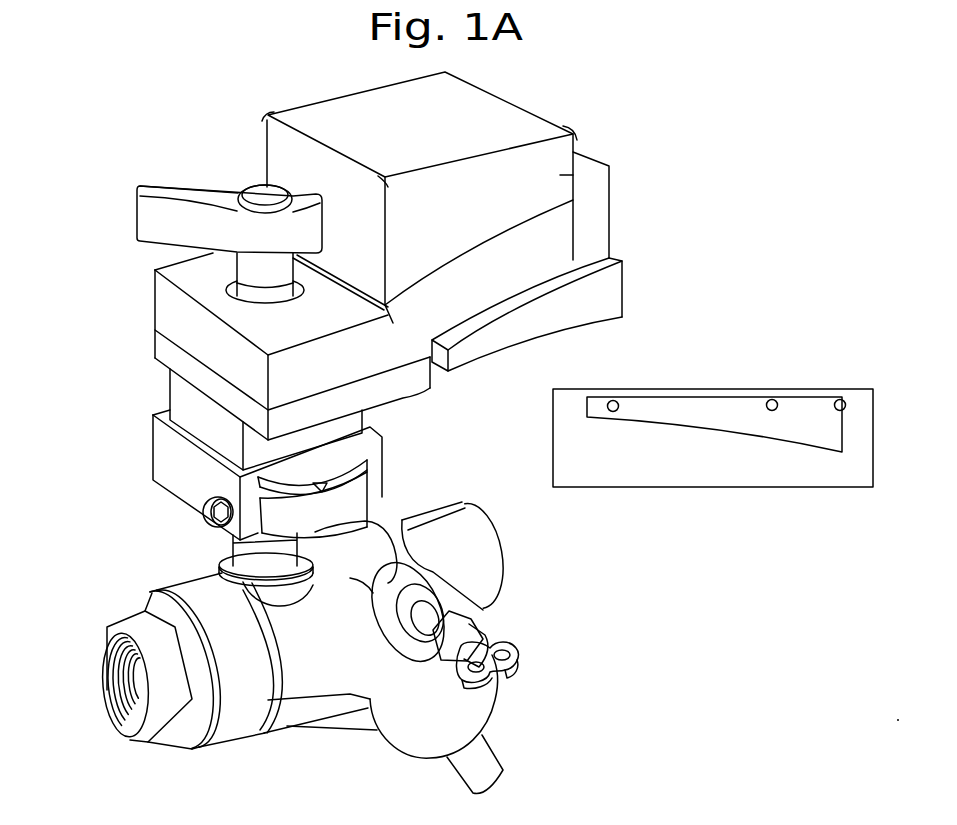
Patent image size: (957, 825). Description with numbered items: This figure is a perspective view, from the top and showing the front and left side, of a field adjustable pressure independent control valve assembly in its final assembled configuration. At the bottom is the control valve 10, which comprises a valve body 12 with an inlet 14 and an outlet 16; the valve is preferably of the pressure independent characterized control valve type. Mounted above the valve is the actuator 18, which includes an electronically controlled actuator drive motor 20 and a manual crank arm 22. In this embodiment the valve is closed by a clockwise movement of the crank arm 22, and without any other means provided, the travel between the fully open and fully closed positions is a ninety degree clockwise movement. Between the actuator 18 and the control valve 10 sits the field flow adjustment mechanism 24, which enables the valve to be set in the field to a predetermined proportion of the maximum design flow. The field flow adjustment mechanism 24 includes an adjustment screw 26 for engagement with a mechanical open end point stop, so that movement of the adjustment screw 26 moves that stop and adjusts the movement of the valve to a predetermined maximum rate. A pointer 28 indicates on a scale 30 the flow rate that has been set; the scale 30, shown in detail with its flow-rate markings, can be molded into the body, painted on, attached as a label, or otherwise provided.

The control valve 10 is at (552, 633).
The valve body 12 is at (320, 667).
The inlet 14 is at (497, 541).
The outlet 16 is at (118, 698).
The actuator 18 is at (630, 106).
The actuator drive motor 20 is at (597, 212).
The manual crank arm 22 is at (201, 192).
The field flow adjustment mechanism 24 is at (155, 488).
The adjustment screw 26 is at (212, 527).
The pointer 28 is at (327, 487).
The scale 30 is at (753, 480).